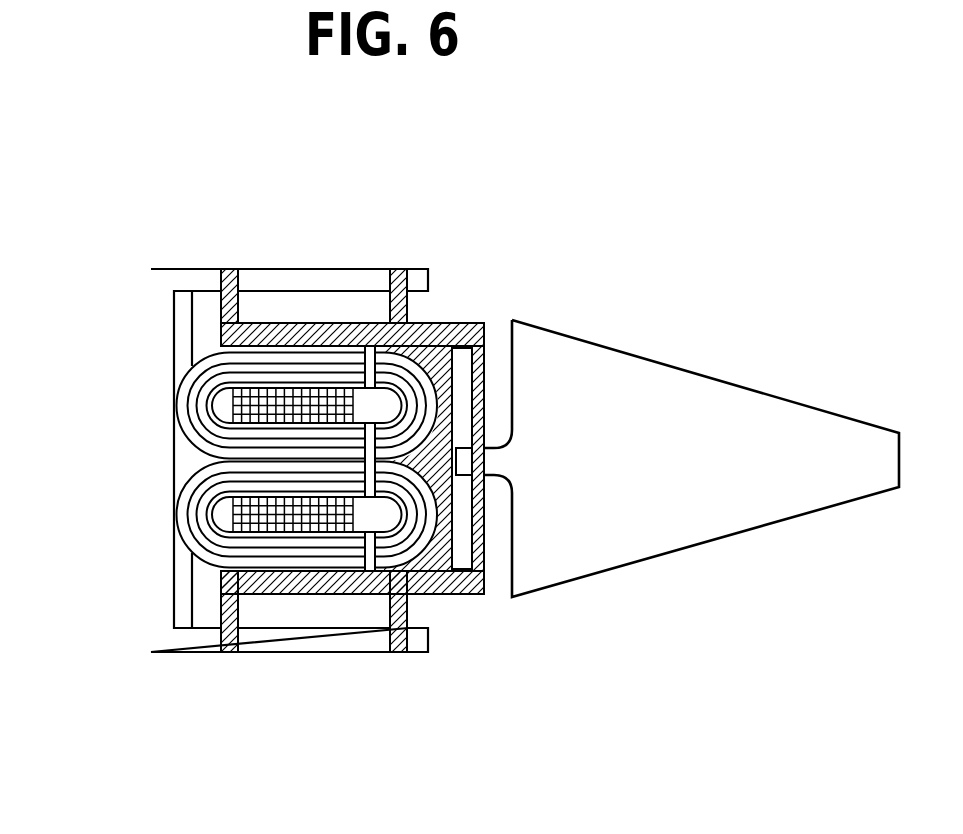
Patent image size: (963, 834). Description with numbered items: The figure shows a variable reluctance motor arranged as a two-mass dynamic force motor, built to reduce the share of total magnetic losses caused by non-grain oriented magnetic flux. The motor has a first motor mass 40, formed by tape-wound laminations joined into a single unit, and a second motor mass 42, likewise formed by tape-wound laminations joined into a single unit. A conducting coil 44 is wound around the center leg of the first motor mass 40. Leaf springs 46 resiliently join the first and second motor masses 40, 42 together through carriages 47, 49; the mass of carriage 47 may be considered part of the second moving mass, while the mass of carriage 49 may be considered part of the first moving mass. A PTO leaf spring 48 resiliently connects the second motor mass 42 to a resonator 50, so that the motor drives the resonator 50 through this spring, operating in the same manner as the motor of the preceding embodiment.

The first motor mass 40 is at (195, 517).
The second motor mass 42 is at (405, 538).
The conducting coil 44 is at (263, 408).
The leaf springs 46 is at (390, 305).
The carriage 47 is at (317, 595).
The PTO leaf spring 48 is at (485, 375).
The carriage 49 is at (163, 625).
The resonator 50 is at (690, 548).